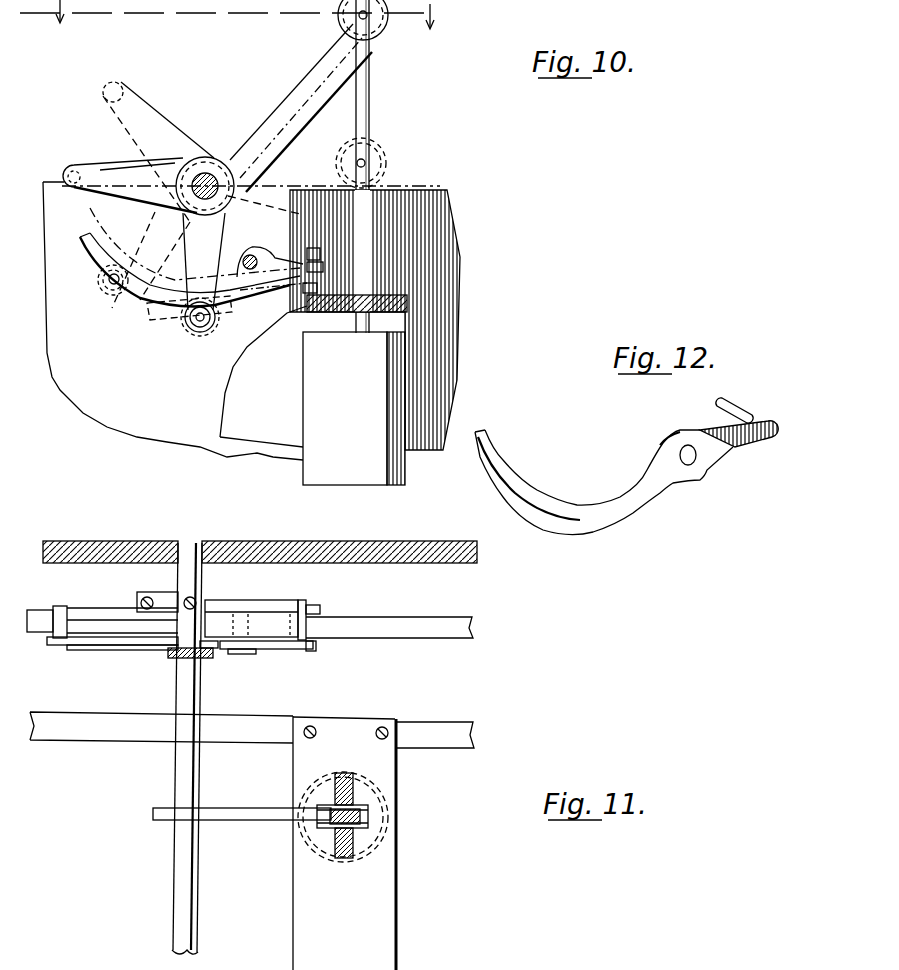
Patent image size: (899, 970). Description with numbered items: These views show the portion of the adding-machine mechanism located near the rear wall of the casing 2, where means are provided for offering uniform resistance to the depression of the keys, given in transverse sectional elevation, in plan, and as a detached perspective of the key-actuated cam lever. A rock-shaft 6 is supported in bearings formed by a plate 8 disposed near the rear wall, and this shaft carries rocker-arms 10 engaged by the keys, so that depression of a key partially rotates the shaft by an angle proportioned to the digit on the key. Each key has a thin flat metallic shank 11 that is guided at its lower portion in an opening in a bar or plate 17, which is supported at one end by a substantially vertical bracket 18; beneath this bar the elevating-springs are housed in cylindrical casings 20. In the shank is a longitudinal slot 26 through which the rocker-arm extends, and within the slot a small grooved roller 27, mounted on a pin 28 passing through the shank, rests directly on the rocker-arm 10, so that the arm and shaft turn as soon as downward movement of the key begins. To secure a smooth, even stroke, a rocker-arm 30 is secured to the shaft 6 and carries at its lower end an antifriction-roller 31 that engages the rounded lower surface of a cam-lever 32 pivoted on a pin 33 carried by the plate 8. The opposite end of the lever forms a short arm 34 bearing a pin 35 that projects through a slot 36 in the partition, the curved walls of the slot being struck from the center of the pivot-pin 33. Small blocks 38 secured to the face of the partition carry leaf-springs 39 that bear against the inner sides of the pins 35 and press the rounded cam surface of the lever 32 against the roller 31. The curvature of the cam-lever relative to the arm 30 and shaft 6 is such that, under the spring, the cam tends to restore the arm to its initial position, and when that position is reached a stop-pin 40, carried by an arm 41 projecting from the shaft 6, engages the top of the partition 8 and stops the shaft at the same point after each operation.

In FIG. 11, the casing 2 is at (358, 545).
In FIG. 10, the shaft 6 is at (208, 174).
In FIG. 11, the shaft 6 is at (176, 900).
In FIG. 10, the plate 8 is at (438, 249).
In FIG. 10, the rocker-arm 10 is at (281, 130).
In FIG. 11, the rocker-arm 10 is at (238, 818).
In FIG. 10, the shank 11 is at (363, 125).
In FIG. 11, the shank 11 is at (352, 852).
In FIG. 10, the bar or plate 17 is at (440, 303).
In FIG. 11, the bar or plate 17 is at (378, 932).
In FIG. 10, the bracket 18 is at (428, 367).
In FIG. 11, the bracket 18 is at (458, 726).
In FIG. 10, the cylindrical casing 20 is at (398, 471).
In FIG. 11, the cylindrical casing 20 is at (385, 838).
In FIG. 11, the longitudinal slot 26 is at (360, 802).
In FIG. 10, the grooved roller 27 is at (373, 18).
In FIG. 11, the grooved roller 27 is at (318, 827).
In FIG. 10, the pin 28 is at (356, 19).
In FIG. 11, the pin 28 is at (330, 843).
In FIG. 10, the rocker-arm 30 is at (204, 261).
In FIG. 11, the rocker-arm 30 is at (208, 656).
In FIG. 10, the antifriction-roller 31 is at (206, 330).
In FIG. 11, the antifriction-roller 31 is at (170, 652).
In FIG. 10, the cam-lever 32 is at (137, 295).
In FIG. 12, the cam-lever 32 is at (617, 520).
In FIG. 11, the cam-lever 32 is at (100, 650).
In FIG. 10, the pivot-pin 33 is at (253, 256).
In FIG. 11, the pivot-pin 33 is at (244, 655).
In FIG. 10, the short arm 34 is at (306, 258).
In FIG. 12, the short arm 34 is at (731, 444).
In FIG. 11, the short arm 34 is at (315, 648).
In FIG. 10, the pin 35 is at (315, 283).
In FIG. 12, the pin 35 is at (733, 408).
In FIG. 11, the pin 35 is at (307, 601).
In FIG. 10, the slot 36 is at (318, 262).
In FIG. 11, the slot 36 is at (308, 622).
In FIG. 10, the block 38 is at (152, 321).
In FIG. 11, the block 38 is at (146, 592).
In FIG. 11, the leaf-spring 39 is at (252, 604).
In FIG. 10, the stop-pin 40 is at (75, 166).
In FIG. 11, the stop-pin 40 is at (66, 612).
In FIG. 10, the arm 41 is at (107, 167).
In FIG. 11, the arm 41 is at (56, 644).